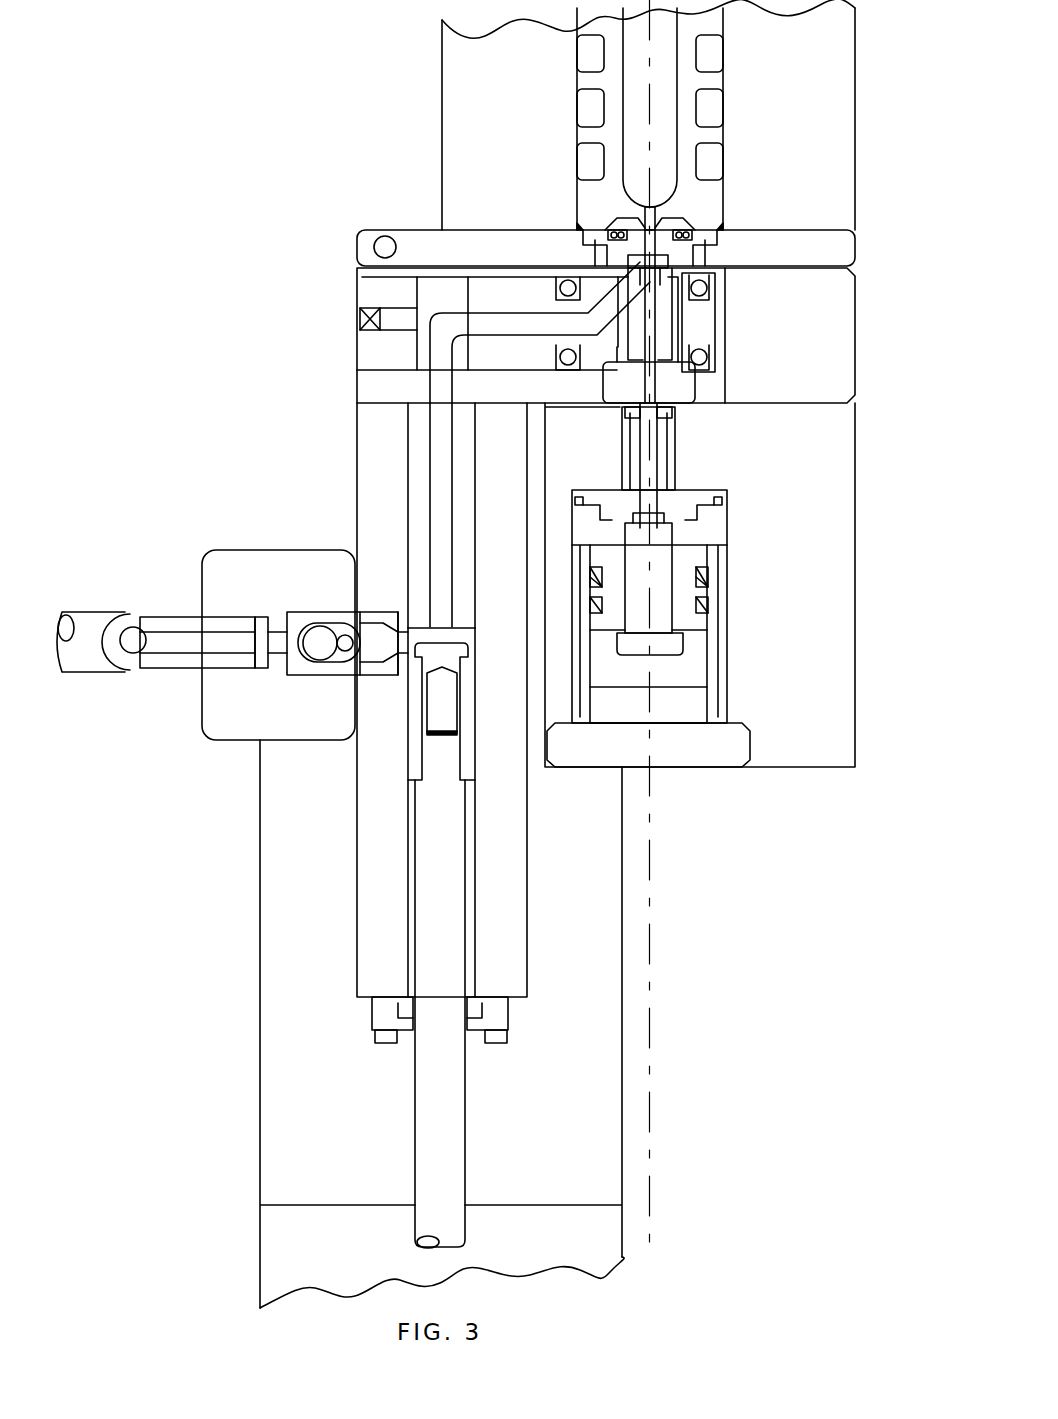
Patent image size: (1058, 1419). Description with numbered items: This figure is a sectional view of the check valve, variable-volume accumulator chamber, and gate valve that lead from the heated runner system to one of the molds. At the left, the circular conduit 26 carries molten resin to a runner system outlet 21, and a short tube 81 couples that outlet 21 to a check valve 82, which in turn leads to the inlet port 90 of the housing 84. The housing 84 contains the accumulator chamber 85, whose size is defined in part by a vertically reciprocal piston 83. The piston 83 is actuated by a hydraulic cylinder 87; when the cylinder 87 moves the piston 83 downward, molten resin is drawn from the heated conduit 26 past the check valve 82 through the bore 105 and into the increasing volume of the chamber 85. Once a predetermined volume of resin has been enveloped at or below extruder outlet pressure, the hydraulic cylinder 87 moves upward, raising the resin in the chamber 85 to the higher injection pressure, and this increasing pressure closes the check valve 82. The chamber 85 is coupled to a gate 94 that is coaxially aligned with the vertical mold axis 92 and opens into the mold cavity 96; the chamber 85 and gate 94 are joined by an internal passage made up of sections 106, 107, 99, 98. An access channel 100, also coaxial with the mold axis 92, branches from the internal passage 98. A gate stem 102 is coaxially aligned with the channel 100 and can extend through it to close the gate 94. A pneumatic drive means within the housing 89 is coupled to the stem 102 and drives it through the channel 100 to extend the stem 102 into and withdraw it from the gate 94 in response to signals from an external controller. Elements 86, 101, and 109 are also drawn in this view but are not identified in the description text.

The runner system outlet 21 is at (118, 620).
The circular conduit 26 is at (107, 630).
The short tube 81 is at (218, 623).
The check valve 82 is at (302, 673).
The piston 83 is at (463, 733).
The housing 84 is at (282, 842).
The accumulator chamber 85 is at (462, 633).
The valve block assembly 86 is at (737, 356).
The hydraulic cylinder 87 is at (578, 1252).
The housing 89 is at (855, 512).
The inlet port 90 is at (362, 640).
The vertical mold axis 92 is at (652, 40).
The gate 94 is at (652, 207).
The mold cavity 96 is at (664, 150).
The internal passage 98 is at (655, 260).
The internal passage 99 is at (630, 290).
The access channel 100 is at (647, 276).
The guide block 101 is at (645, 250).
The gate stem 102 is at (658, 462).
The bore 105 is at (387, 662).
The internal passage 106 is at (453, 547).
The internal passage 107 is at (457, 310).
The actuating cylinder 109 is at (727, 648).